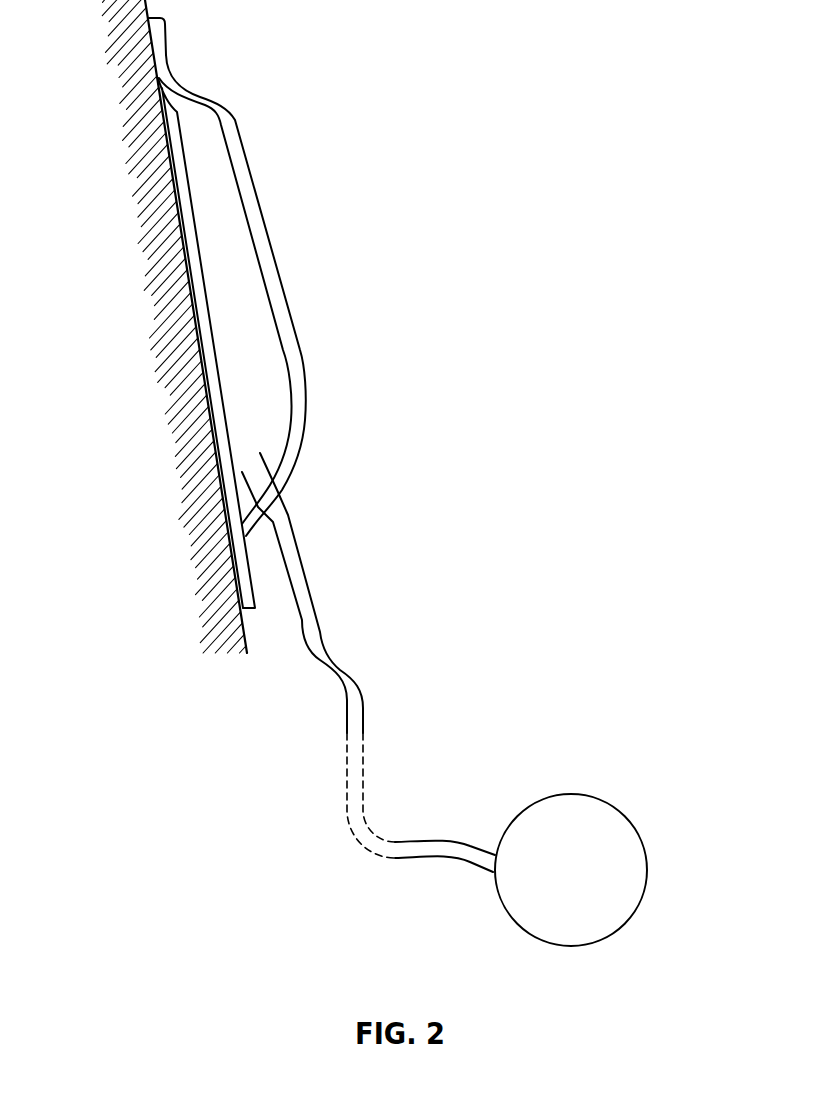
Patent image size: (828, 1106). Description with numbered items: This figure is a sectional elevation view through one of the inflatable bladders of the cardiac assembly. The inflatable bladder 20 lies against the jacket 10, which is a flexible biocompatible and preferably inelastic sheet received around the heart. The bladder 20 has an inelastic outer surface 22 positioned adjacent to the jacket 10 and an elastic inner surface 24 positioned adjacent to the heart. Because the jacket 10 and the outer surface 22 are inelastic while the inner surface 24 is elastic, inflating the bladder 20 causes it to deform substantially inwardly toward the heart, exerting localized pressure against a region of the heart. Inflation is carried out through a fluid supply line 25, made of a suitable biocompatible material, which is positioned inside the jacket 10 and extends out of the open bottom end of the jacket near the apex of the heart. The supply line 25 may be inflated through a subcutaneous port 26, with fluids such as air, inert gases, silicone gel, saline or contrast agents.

The jacket 10 is at (176, 246).
The inelastic outer surface 22 is at (180, 183).
The inflatable bladder 20 is at (238, 265).
The elastic inner surface 24 is at (292, 340).
The fluid supply line 25 is at (340, 664).
The subcutaneous port 26 is at (616, 830).